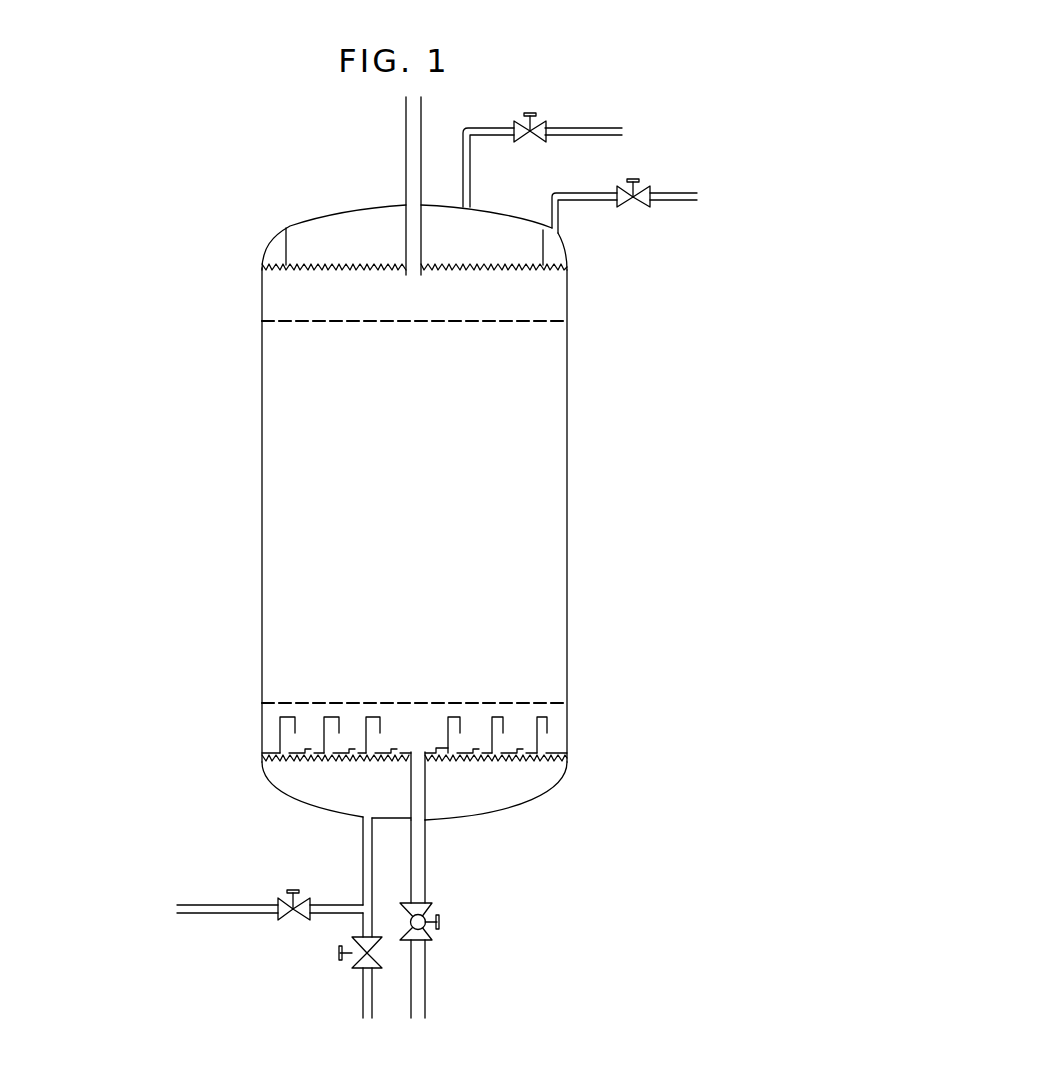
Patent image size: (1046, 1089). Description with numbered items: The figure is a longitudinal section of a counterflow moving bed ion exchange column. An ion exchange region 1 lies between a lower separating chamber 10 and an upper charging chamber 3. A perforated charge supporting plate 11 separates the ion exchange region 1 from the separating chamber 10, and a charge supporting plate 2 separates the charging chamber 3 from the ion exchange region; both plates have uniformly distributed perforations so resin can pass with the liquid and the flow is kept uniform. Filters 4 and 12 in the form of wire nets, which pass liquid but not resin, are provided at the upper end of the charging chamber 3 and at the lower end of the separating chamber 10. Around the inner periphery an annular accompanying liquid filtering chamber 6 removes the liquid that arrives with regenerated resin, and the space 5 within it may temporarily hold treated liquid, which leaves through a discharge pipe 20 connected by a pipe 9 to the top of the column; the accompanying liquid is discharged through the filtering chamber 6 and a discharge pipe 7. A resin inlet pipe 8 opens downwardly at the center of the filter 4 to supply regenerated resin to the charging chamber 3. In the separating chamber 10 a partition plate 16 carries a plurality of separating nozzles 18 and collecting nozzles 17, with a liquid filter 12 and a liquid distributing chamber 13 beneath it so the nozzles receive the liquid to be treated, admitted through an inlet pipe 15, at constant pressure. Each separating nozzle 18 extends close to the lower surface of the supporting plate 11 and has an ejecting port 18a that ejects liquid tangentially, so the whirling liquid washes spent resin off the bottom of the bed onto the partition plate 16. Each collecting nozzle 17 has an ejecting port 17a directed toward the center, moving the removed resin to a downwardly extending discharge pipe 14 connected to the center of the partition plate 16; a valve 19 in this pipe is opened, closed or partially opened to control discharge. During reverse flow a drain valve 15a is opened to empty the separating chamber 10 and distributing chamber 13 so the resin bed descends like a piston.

The ion exchange region 1 is at (537, 454).
The charge supporting plate 2 is at (490, 322).
The charging chamber 3 is at (272, 297).
The filter 4 is at (311, 270).
The space within the annular filtering chamber 5 is at (350, 222).
The annular accompanying liquid filtering chamber 6 is at (556, 252).
The discharge pipe 7 is at (585, 192).
The resin inlet pipe 8 is at (421, 110).
The vent pipe 9 is at (470, 178).
The separating chamber 10 is at (409, 727).
The perforated charge supporting plate 11 is at (370, 702).
The liquid filter 12 is at (452, 763).
The liquid distributing chamber 13 is at (308, 795).
The discharge pipe 14 is at (425, 862).
The inlet pipe 15 is at (363, 862).
The drain valve 15a is at (338, 953).
The partition plate 16 is at (556, 749).
The collecting nozzle 17 is at (519, 751).
The ejecting port 17a is at (469, 749).
The separating nozzle 18 is at (535, 756).
The ejecting port 18a is at (297, 722).
The valve 19 is at (442, 922).
The discharge pipe 20 is at (531, 113).